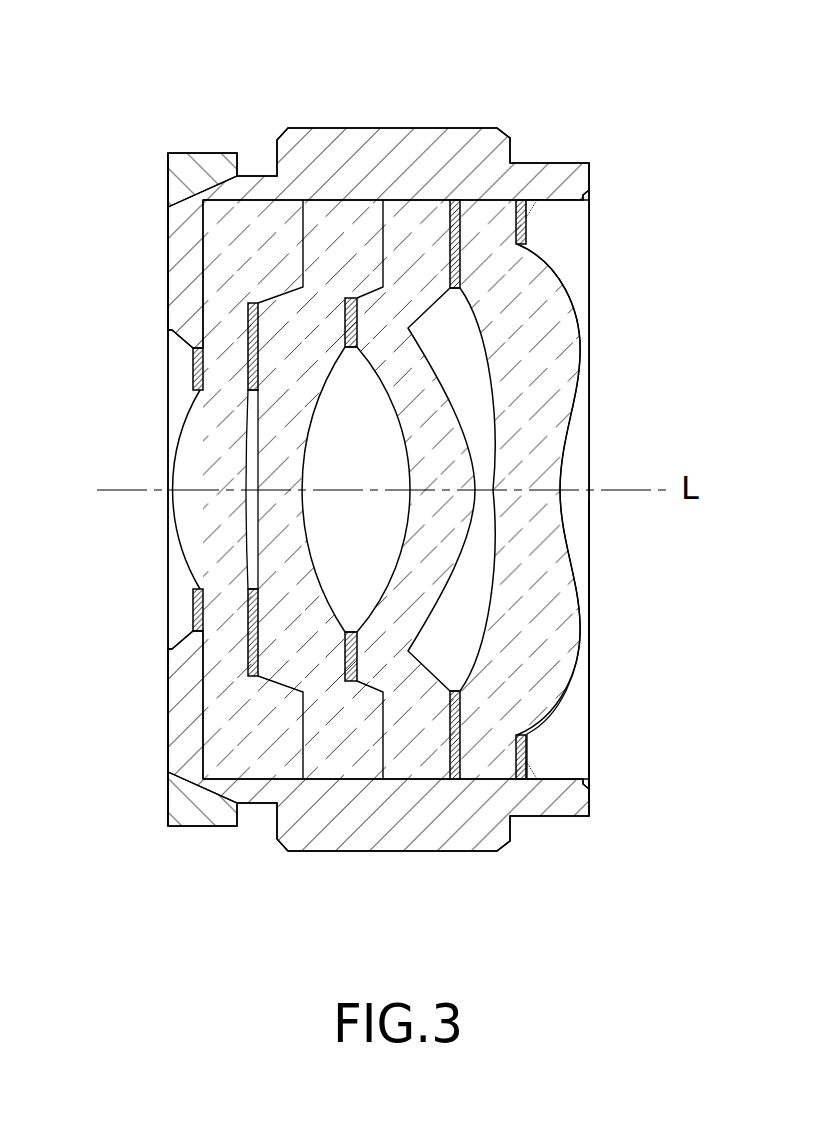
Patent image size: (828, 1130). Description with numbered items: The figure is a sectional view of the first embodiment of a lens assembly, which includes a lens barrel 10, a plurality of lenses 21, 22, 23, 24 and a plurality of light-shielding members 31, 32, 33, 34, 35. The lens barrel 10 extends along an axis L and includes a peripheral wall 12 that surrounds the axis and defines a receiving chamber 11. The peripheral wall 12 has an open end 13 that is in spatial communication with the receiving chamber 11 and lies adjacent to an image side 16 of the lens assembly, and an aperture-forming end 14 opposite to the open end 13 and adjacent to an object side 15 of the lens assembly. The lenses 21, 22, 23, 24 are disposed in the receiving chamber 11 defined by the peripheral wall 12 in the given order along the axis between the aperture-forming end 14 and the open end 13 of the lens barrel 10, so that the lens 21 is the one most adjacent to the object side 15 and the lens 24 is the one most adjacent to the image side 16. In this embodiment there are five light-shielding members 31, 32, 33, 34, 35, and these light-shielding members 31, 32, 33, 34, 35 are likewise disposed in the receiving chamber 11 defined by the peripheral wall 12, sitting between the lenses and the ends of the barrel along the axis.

The lens barrel 10 is at (378, 128).
The receiving chamber 11 is at (567, 233).
The peripheral wall 12 is at (477, 137).
The open end 13 is at (587, 532).
The aperture-forming end 14 is at (168, 515).
The object side 15 is at (150, 620).
The image side 16 is at (606, 581).
The lens 21 is at (193, 560).
The lens 22 is at (288, 593).
The lens 23 is at (408, 590).
The lens 24 is at (568, 653).
The light-shielding member 31 is at (180, 354).
The light-shielding member 32 is at (236, 660).
The light-shielding member 33 is at (353, 695).
The light-shielding member 34 is at (457, 792).
The light-shielding member 35 is at (538, 748).